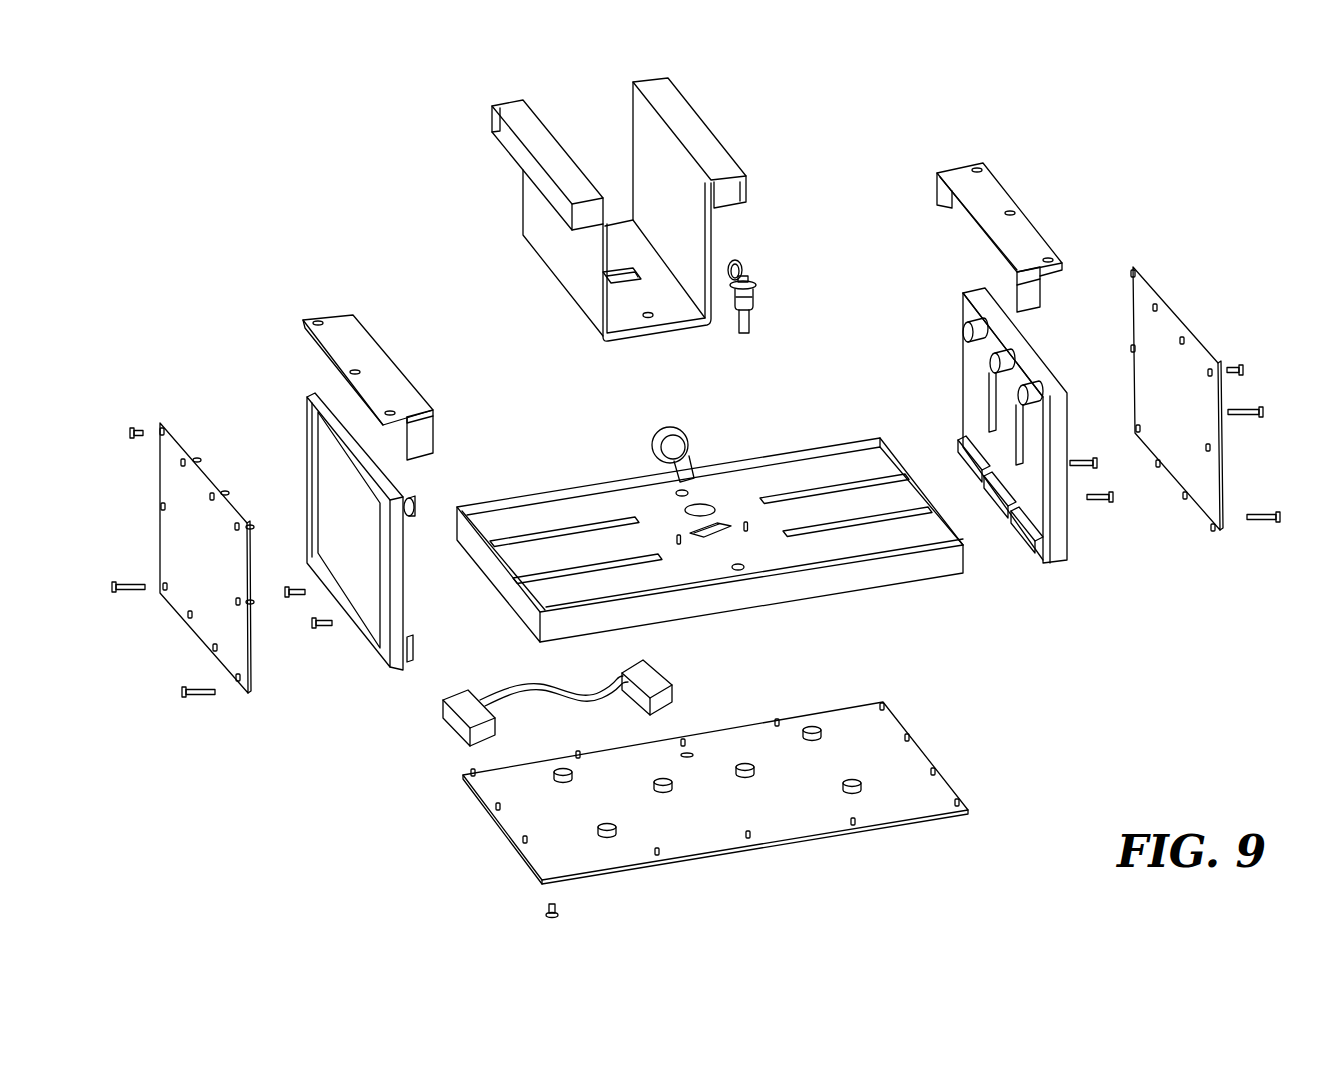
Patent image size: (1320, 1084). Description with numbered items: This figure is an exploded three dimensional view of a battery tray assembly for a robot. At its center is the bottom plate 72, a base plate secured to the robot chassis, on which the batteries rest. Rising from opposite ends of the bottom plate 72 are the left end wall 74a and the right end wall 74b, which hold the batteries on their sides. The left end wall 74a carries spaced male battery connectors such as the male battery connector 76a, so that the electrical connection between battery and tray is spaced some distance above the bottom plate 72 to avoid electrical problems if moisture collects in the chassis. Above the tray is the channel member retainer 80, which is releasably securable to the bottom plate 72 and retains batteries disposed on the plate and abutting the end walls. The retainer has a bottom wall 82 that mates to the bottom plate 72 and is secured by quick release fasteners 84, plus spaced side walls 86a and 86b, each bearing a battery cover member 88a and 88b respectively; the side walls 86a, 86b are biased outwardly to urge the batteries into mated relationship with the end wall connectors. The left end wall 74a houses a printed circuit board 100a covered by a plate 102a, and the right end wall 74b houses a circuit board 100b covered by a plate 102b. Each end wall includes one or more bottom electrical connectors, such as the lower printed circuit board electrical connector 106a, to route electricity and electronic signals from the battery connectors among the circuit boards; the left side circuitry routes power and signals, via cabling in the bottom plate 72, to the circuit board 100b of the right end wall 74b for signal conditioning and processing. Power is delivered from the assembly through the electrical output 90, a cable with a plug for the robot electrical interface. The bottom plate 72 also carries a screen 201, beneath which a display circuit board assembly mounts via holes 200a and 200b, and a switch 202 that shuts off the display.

The bottom plate 72 is at (953, 627).
The left end wall 74a is at (238, 401).
The right end wall 74b is at (1102, 247).
The male battery connector 76a is at (412, 512).
The channel member retainer 80 is at (480, 185).
The bottom wall 82 is at (668, 313).
The quick release fastener 84 is at (756, 313).
The side wall 86a is at (562, 260).
The side wall 86b is at (650, 152).
The battery cover member 88a is at (508, 108).
The battery cover member 88b is at (687, 125).
The electrical output 90 is at (658, 433).
The printed circuit board 100a is at (368, 580).
The circuit board 100b is at (1058, 513).
The plate 102a is at (202, 580).
The plate 102b is at (1194, 333).
The lower printed circuit board electrical connector 106a is at (1032, 537).
The hole 200a is at (680, 546).
The hole 200b is at (748, 532).
The screen 201 is at (713, 530).
The switch 202 is at (708, 505).